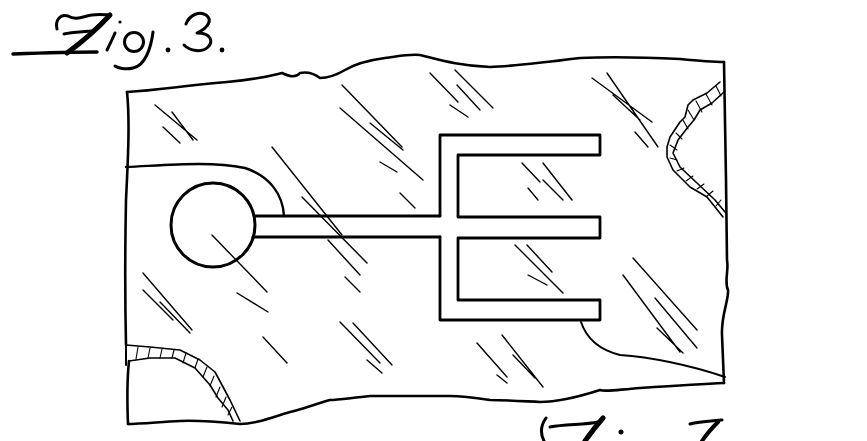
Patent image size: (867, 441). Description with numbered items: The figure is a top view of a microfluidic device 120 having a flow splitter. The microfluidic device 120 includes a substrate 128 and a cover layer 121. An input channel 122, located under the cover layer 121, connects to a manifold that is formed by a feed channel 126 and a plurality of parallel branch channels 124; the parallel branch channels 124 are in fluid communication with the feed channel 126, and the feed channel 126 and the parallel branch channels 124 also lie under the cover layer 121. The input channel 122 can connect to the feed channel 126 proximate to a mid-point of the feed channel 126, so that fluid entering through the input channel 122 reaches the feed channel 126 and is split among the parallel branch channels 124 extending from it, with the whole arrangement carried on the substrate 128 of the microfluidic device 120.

The microfluidic device 120 is at (683, 270).
The cover layer 121 is at (128, 360).
The input channel 122 is at (126, 167).
The parallel branch channels 124 is at (753, 379).
The feed channel 126 is at (442, 296).
The substrate 128 is at (145, 400).